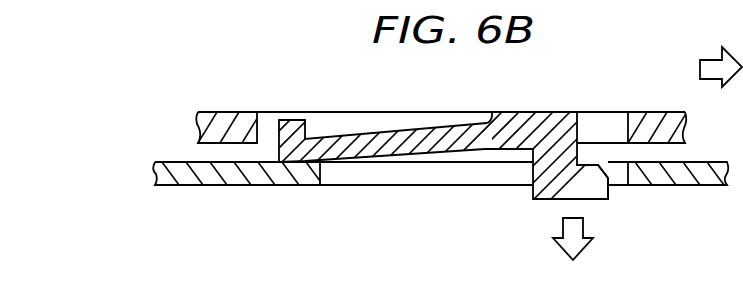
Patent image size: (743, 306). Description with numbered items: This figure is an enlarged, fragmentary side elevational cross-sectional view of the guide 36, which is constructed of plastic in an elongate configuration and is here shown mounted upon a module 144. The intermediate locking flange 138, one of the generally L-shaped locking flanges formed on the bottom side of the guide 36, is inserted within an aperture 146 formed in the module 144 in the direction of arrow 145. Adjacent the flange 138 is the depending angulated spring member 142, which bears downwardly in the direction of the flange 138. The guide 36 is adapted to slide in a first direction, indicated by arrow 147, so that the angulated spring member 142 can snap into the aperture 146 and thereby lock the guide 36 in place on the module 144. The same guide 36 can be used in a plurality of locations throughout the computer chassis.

The guide 36 is at (547, 112).
The intermediate locking flange 138 is at (594, 198).
The angulated spring member 142 is at (366, 140).
The module 144 is at (703, 180).
The arrow 145 is at (563, 228).
The aperture 146 is at (424, 186).
The arrow 147 is at (700, 68).